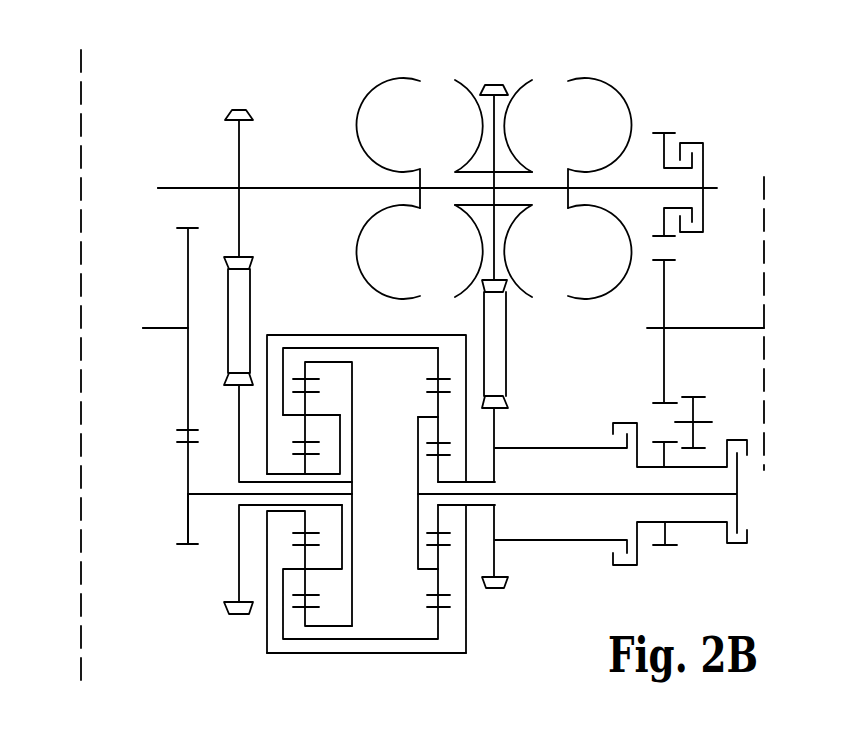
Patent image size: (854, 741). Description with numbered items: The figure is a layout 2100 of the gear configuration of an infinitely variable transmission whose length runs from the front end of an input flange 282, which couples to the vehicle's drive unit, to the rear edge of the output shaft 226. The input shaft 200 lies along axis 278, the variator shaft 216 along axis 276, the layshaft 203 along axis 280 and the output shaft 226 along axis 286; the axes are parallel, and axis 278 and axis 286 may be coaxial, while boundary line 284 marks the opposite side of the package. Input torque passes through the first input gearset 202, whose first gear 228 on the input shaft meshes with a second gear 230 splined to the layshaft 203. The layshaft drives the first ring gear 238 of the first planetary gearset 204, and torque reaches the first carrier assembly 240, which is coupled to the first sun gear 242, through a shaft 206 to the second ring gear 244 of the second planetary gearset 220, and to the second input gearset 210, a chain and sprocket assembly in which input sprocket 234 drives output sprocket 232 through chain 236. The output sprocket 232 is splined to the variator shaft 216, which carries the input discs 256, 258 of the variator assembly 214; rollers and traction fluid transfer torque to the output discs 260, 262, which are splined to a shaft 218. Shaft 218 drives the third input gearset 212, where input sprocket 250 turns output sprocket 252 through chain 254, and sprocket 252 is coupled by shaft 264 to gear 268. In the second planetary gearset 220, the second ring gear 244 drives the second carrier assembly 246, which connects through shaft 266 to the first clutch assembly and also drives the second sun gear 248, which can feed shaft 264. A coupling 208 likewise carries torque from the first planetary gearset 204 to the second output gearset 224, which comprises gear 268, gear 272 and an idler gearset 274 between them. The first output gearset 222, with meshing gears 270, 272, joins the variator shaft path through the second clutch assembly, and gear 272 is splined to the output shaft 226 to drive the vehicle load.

The layout 2100 is at (178, 68).
The input flange 282 is at (83, 100).
The output side boundary 284 is at (765, 237).
The variator shaft 216 is at (290, 188).
The axis 276 is at (145, 188).
The output sprocket 232 is at (238, 148).
The chain 236 is at (272, 300).
The input sprocket 234 is at (238, 572).
The second input gearset 210 is at (228, 630).
The first gear 228 is at (188, 390).
The second gear 230 is at (188, 530).
The first input gearset 202 is at (178, 561).
The input shaft 200 is at (168, 328).
The axis 278 is at (125, 328).
The layshaft 203 is at (213, 494).
The axis 280 is at (158, 493).
The coupling 208 is at (358, 335).
The first ring gear 238 is at (340, 440).
The first carrier assembly 240 is at (322, 415).
The shaft 206 is at (368, 348).
The first sun gear 242 is at (308, 463).
The second ring gear 244 is at (438, 350).
The second carrier assembly 246 is at (425, 438).
The second sun gear 248 is at (415, 490).
The first planetary gearset 204 is at (299, 666).
The second planetary gearset 220 is at (446, 663).
The variator assembly 214 is at (392, 82).
The input disc 256 is at (392, 115).
The output disc 260 is at (478, 118).
The output disc 262 is at (509, 118).
The input disc 258 is at (585, 95).
The input sprocket 250 is at (490, 245).
The shaft 218 is at (528, 205).
The chain 254 is at (520, 352).
The output sprocket 252 is at (497, 425).
The third input gearset 212 is at (504, 601).
The shaft 264 is at (535, 450).
The shaft 266 is at (530, 495).
The gear 270 is at (663, 155).
The first output gearset 222 is at (657, 110).
The gear 272 is at (664, 296).
The idler gearset 274 is at (693, 415).
The output shaft 226 is at (713, 328).
The axis 286 is at (770, 328).
The gear 268 is at (667, 532).
The second output gearset 224 is at (664, 556).